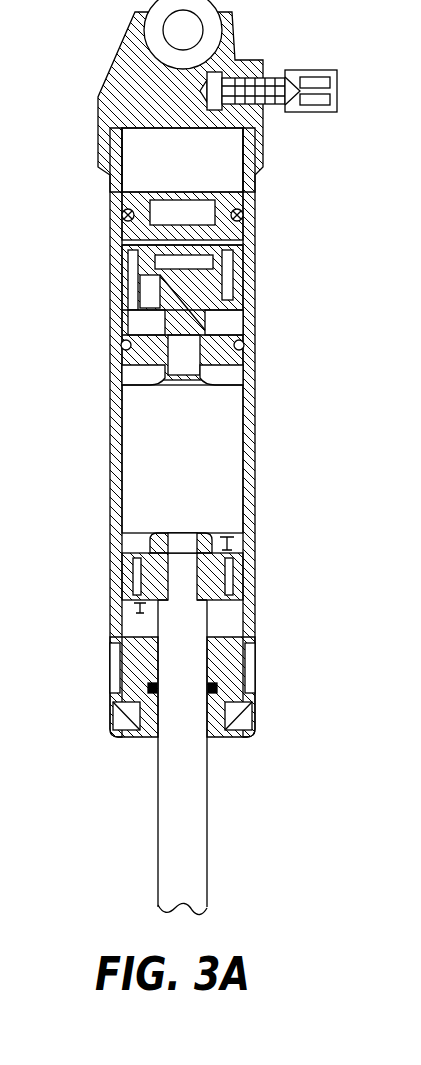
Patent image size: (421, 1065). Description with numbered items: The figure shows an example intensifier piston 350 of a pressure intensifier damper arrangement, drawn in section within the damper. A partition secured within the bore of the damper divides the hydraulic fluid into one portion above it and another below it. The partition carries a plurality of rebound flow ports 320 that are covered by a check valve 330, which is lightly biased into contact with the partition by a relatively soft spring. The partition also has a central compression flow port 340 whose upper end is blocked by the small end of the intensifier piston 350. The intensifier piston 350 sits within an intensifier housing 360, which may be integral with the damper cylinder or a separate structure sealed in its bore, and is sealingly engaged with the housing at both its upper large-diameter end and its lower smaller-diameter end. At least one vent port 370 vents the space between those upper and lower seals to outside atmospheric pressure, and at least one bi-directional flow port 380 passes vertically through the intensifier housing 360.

The rebound flow ports 320 is at (187, 850).
The check valve 330 is at (253, 720).
The central compression flow port 340 is at (215, 600).
The intensifier piston 350 is at (247, 533).
The intensifier housing 360 is at (250, 214).
The vent port 370 is at (175, 468).
The bi-directional flow port 380 is at (187, 155).